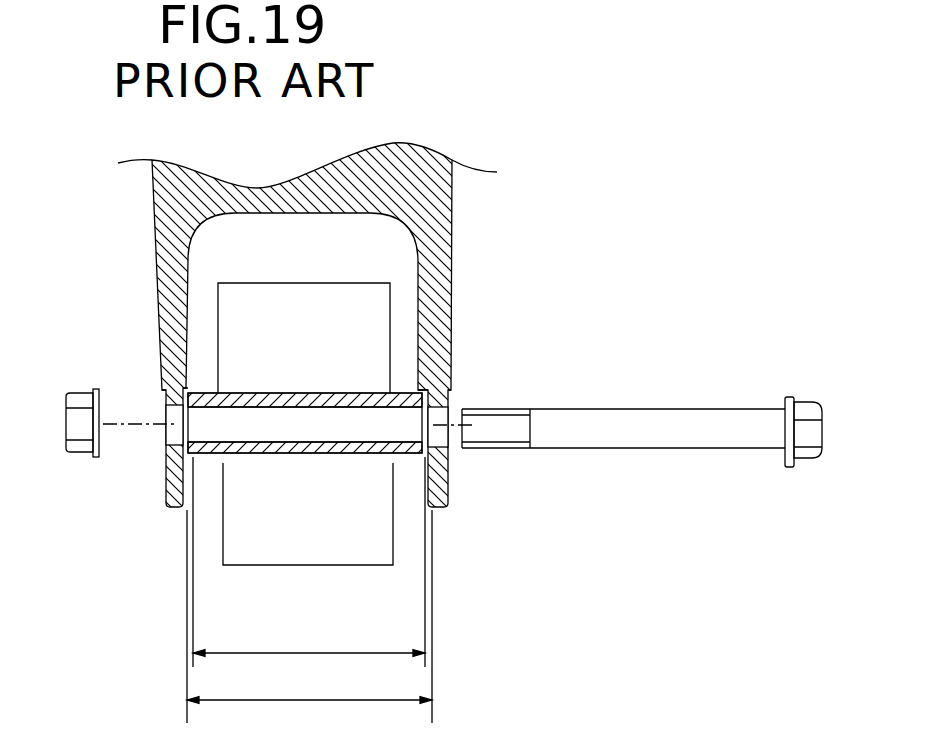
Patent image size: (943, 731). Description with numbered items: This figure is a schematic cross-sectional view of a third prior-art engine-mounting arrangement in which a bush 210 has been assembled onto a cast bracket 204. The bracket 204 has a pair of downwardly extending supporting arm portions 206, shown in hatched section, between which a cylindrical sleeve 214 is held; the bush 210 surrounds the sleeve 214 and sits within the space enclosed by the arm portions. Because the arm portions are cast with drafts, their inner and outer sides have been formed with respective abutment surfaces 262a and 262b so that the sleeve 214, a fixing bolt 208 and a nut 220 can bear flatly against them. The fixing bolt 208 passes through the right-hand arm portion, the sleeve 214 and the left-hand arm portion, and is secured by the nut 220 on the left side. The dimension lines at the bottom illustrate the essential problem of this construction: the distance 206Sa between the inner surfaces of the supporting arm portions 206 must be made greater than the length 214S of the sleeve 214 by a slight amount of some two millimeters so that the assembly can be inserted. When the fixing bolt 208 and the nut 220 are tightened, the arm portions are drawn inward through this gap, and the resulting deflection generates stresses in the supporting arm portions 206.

The bracket 204 is at (430, 142).
The supporting arm portions 206 is at (455, 236).
The abutment surface 262a is at (193, 385).
The abutment surface 262b is at (158, 392).
The sleeve 214 is at (347, 450).
The bush 210 is at (382, 558).
The fixing bolt 208 is at (806, 465).
The nut 220 is at (80, 450).
The length of the sleeve 214S is at (309, 562).
The distance between inner surfaces of supporting arm portions 206Sa is at (309, 616).